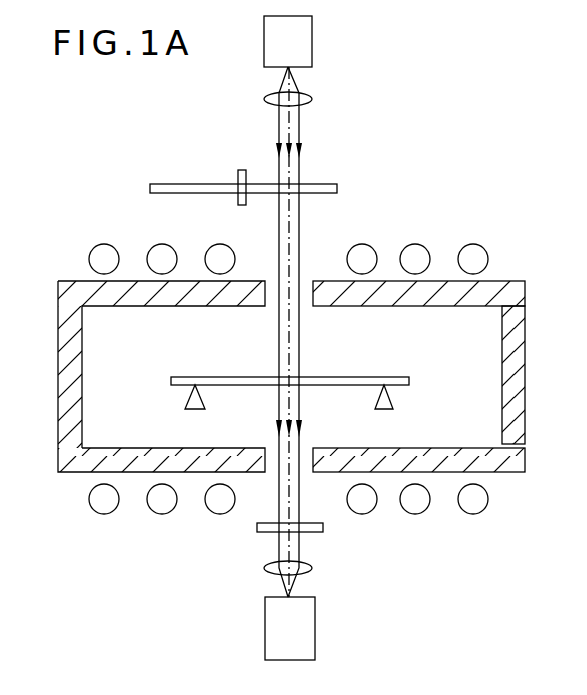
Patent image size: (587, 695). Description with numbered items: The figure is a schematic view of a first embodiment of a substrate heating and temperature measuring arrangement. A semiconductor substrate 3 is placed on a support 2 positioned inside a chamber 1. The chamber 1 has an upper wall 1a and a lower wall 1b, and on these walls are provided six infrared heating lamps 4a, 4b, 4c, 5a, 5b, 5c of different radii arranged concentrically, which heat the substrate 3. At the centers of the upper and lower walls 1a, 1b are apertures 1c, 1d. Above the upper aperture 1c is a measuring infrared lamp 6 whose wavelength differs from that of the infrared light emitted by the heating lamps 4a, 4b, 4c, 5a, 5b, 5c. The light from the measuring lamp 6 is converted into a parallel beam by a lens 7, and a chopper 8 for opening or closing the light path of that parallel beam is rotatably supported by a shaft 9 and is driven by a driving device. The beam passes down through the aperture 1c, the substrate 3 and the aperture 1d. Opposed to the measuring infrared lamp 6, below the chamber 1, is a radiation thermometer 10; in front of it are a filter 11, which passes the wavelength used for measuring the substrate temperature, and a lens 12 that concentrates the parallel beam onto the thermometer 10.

The chamber 1 is at (283, 380).
The upper wall 1a is at (82, 288).
The lower wall 1b is at (62, 462).
The aperture 1c is at (308, 288).
The aperture 1d is at (306, 470).
The support 2 is at (185, 401).
The semiconductor substrate 3 is at (383, 378).
The infrared heating lamp 4a is at (366, 254).
The infrared heating lamp 4b is at (421, 252).
The infrared heating lamp 4c is at (478, 252).
The infrared heating lamp 5a is at (372, 510).
The infrared heating lamp 5b is at (425, 507).
The infrared heating lamp 5c is at (485, 508).
The measuring infrared lamp 6 is at (312, 31).
The lens 7 is at (312, 97).
The chopper 8 is at (171, 185).
The shaft 9 is at (238, 172).
The radiation thermometer 10 is at (312, 632).
The filter 11 is at (257, 528).
The lens 12 is at (268, 568).